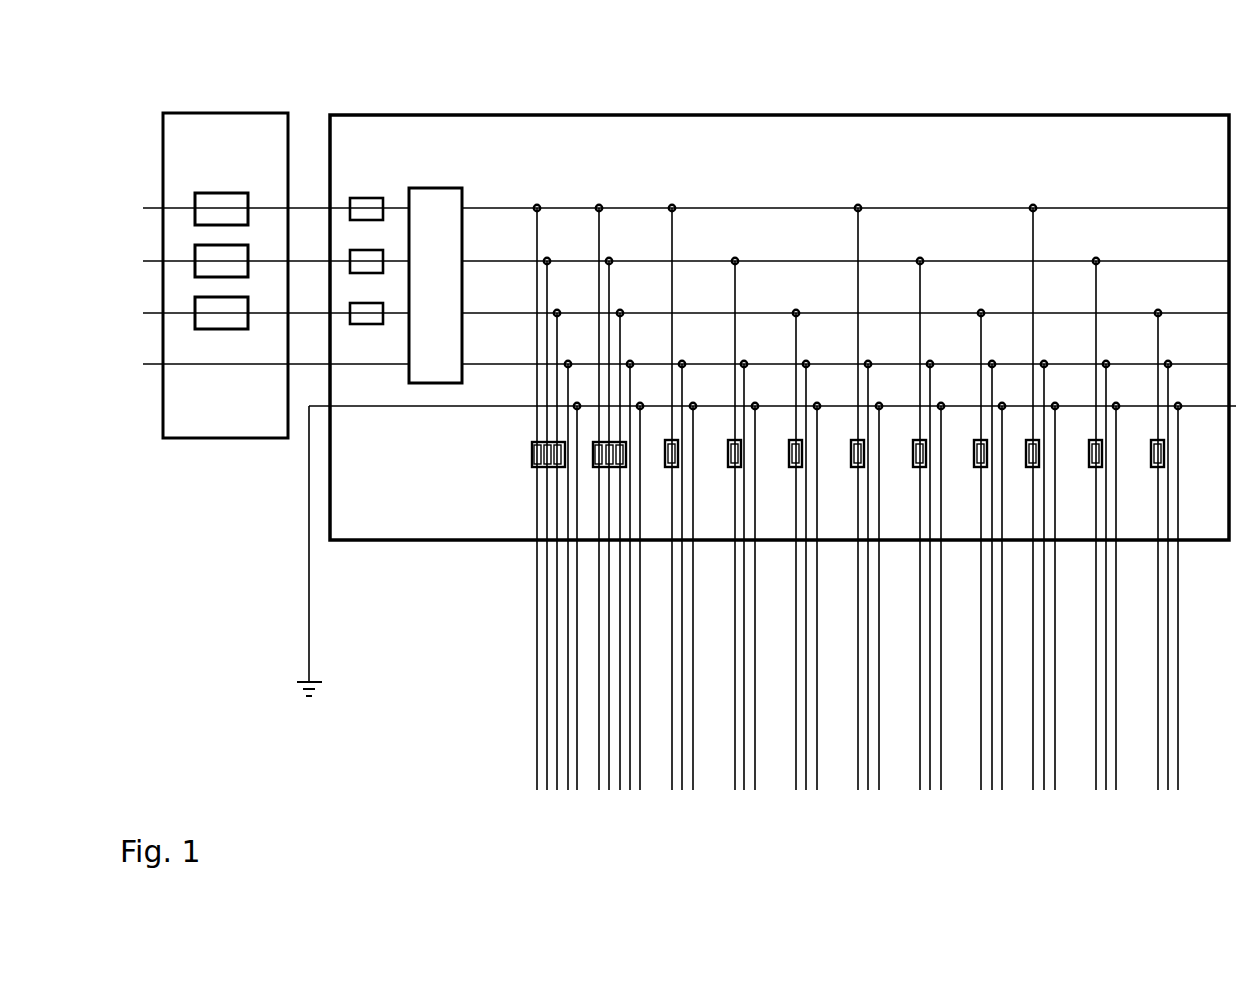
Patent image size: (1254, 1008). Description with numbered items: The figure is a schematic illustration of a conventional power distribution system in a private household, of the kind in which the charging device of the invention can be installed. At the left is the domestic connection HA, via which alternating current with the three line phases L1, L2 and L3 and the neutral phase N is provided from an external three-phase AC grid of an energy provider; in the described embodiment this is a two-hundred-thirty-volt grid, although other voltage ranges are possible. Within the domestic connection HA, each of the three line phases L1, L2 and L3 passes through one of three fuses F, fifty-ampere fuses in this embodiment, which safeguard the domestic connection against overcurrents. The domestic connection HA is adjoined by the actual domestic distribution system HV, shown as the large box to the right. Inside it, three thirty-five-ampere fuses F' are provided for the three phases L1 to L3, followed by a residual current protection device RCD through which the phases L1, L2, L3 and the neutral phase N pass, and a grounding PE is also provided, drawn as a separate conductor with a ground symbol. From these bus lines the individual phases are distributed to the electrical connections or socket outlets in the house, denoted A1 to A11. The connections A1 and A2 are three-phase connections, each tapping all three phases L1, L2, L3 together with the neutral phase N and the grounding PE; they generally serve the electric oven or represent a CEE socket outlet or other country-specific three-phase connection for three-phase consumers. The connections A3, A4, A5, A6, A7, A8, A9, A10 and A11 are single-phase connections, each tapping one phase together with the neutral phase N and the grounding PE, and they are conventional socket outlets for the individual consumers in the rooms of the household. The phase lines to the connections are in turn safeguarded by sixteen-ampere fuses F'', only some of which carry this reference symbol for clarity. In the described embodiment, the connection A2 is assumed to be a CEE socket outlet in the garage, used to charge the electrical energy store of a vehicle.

The domestic connection HA is at (243, 113).
The domestic distribution system HV is at (543, 115).
The residual current protection device RCD is at (433, 188).
The fuses F is at (229, 279).
The fuses F' is at (376, 281).
The fuses F'' is at (835, 476).
The grounding PE is at (309, 643).
The line phase L1 is at (665, 208).
The line phase L2 is at (665, 261).
The line phase L3 is at (665, 313).
The neutral phase N is at (669, 364).
The three-phase connection A1 is at (557, 516).
The three-phase connection A2 is at (619, 516).
The single-phase connection A3 is at (680, 516).
The single-phase connection A4 is at (742, 543).
The single-phase connection A5 is at (805, 569).
The single-phase connection A6 is at (866, 516).
The single-phase connection A7 is at (929, 543).
The single-phase connection A8 is at (991, 569).
The single-phase connection A9 is at (1043, 516).
The single-phase connection A10 is at (1105, 543).
The single-phase connection A11 is at (1165, 569).